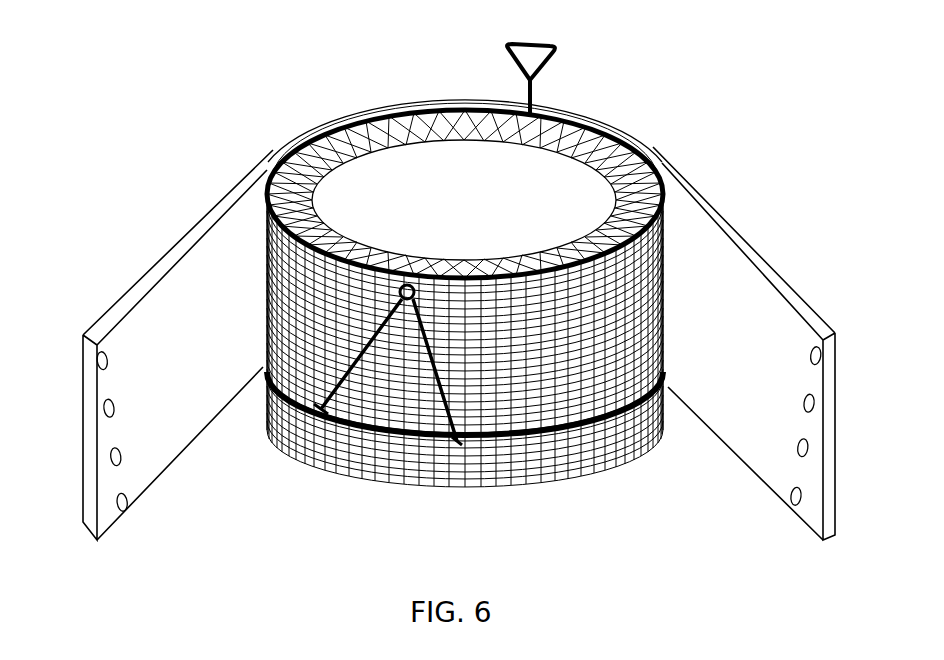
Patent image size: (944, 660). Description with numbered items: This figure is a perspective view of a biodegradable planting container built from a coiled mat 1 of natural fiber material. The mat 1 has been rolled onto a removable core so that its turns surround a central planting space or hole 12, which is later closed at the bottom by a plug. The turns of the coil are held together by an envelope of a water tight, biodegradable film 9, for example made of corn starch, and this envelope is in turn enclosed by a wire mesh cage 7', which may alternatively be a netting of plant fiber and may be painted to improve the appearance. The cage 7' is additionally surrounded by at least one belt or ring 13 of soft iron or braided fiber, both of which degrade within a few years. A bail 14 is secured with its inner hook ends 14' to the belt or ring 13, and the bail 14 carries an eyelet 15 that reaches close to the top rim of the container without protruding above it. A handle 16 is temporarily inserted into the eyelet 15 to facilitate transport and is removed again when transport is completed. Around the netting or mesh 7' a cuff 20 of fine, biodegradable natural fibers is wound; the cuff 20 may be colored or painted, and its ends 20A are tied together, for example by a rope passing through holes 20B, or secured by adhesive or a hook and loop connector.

The mat 1 is at (310, 193).
The cage 7' is at (485, 344).
The film 9 is at (655, 191).
The planting space or hole 12 is at (360, 167).
The belt or ring 13 is at (585, 425).
The bail 14 is at (371, 410).
The inner hook ends 14' is at (362, 481).
The eyelet 15 is at (412, 273).
The handle 16 is at (560, 50).
The cuff 20 is at (152, 458).
The ends of the cuff 20A is at (85, 527).
The holes 20B is at (118, 403).